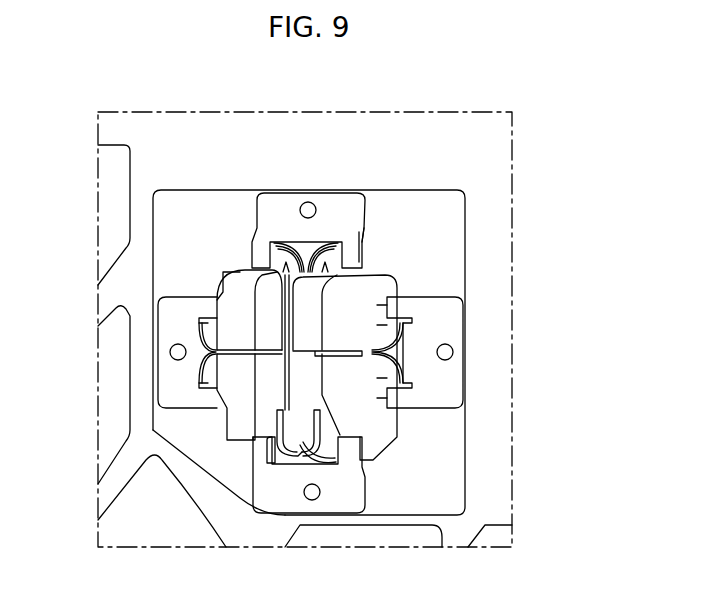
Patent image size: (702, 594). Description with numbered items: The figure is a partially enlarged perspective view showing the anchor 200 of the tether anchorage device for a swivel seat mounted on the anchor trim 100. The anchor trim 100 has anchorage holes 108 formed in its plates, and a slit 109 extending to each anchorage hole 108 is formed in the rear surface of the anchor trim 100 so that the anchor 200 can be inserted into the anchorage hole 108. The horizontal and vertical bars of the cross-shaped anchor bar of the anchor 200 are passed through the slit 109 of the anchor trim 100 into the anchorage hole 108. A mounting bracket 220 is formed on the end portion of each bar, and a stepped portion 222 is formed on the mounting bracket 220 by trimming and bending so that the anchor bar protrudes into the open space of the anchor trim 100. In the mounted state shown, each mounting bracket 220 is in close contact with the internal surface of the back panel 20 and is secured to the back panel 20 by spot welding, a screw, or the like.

The back panel 20 is at (437, 214).
The anchor trim 100 is at (222, 288).
The anchorage hole 108 is at (410, 350).
The slit 109 is at (352, 353).
The anchor 200 is at (334, 173).
The mounting bracket 220 is at (352, 206).
The stepped portion 222 is at (364, 234).